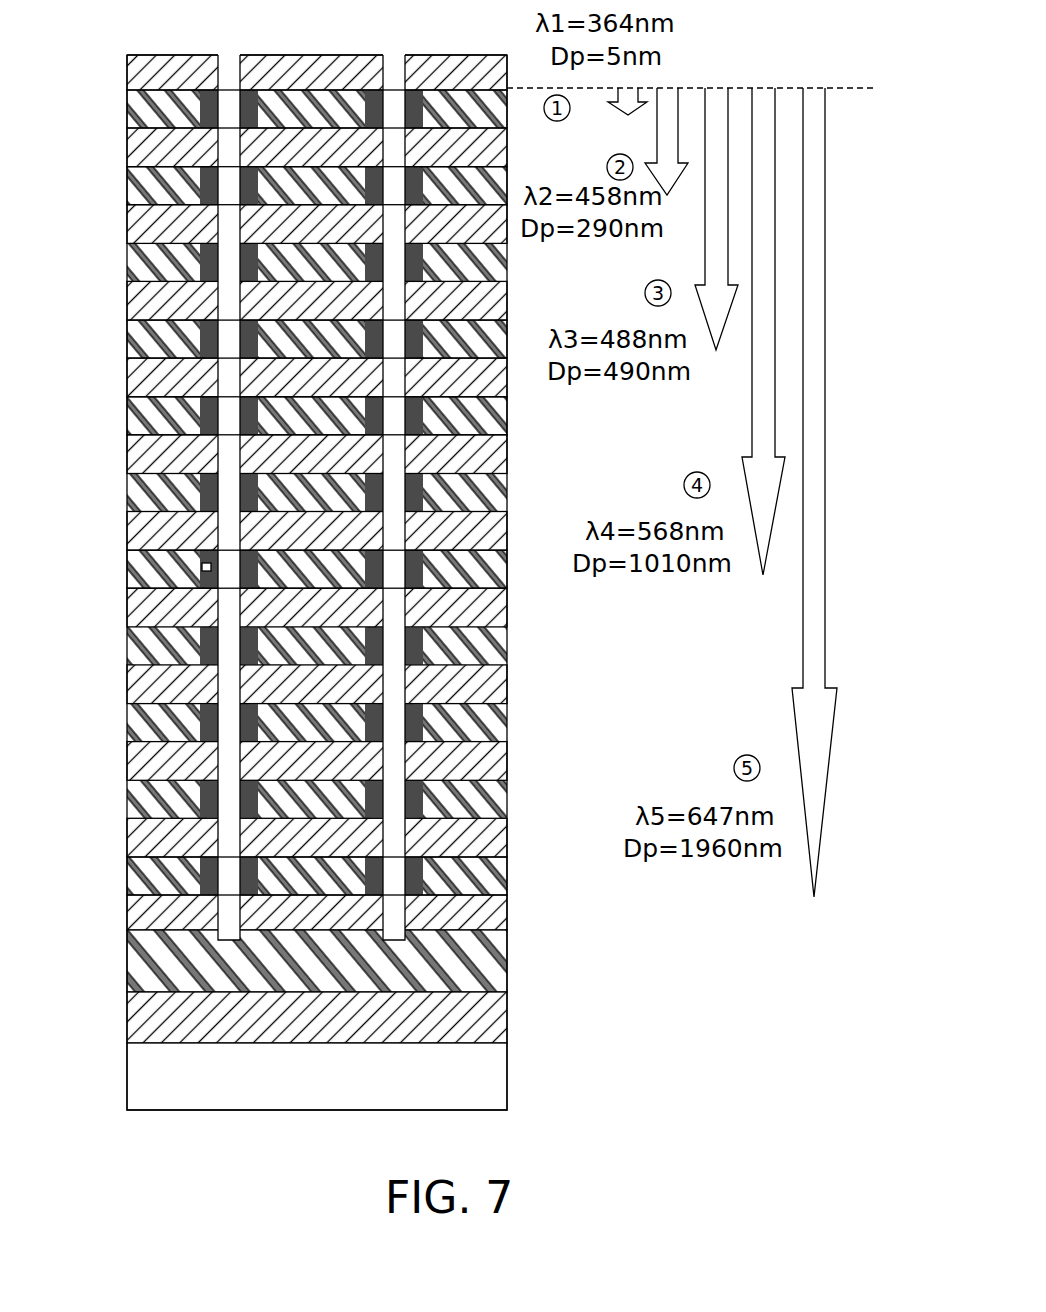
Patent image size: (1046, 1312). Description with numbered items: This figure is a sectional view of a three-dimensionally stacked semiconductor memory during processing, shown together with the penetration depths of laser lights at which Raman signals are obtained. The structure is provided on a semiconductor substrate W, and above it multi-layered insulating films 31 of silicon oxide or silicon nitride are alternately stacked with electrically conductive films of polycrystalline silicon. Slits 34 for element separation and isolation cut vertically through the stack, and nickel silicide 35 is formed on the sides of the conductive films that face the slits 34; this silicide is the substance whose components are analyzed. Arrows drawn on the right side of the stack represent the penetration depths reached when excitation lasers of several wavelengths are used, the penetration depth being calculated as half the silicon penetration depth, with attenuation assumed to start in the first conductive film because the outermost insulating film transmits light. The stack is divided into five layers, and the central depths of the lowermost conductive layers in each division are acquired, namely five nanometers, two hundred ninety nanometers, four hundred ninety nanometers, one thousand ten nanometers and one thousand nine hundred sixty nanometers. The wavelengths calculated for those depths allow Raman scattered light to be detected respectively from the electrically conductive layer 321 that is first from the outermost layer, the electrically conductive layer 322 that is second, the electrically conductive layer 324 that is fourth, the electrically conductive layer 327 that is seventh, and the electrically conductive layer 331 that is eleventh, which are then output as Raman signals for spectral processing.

The electrically conductive layer 321 is at (127, 112).
The electrically conductive layer 322 is at (127, 188).
The insulating film 31 is at (127, 303).
The electrically conductive layer 324 is at (127, 341).
The slit 34 is at (127, 419).
The nickel silicide 35 is at (203, 567).
The electrically conductive layer 327 is at (135, 570).
The electrically conductive layer 331 is at (127, 877).
The semiconductor substrate W is at (155, 1078).